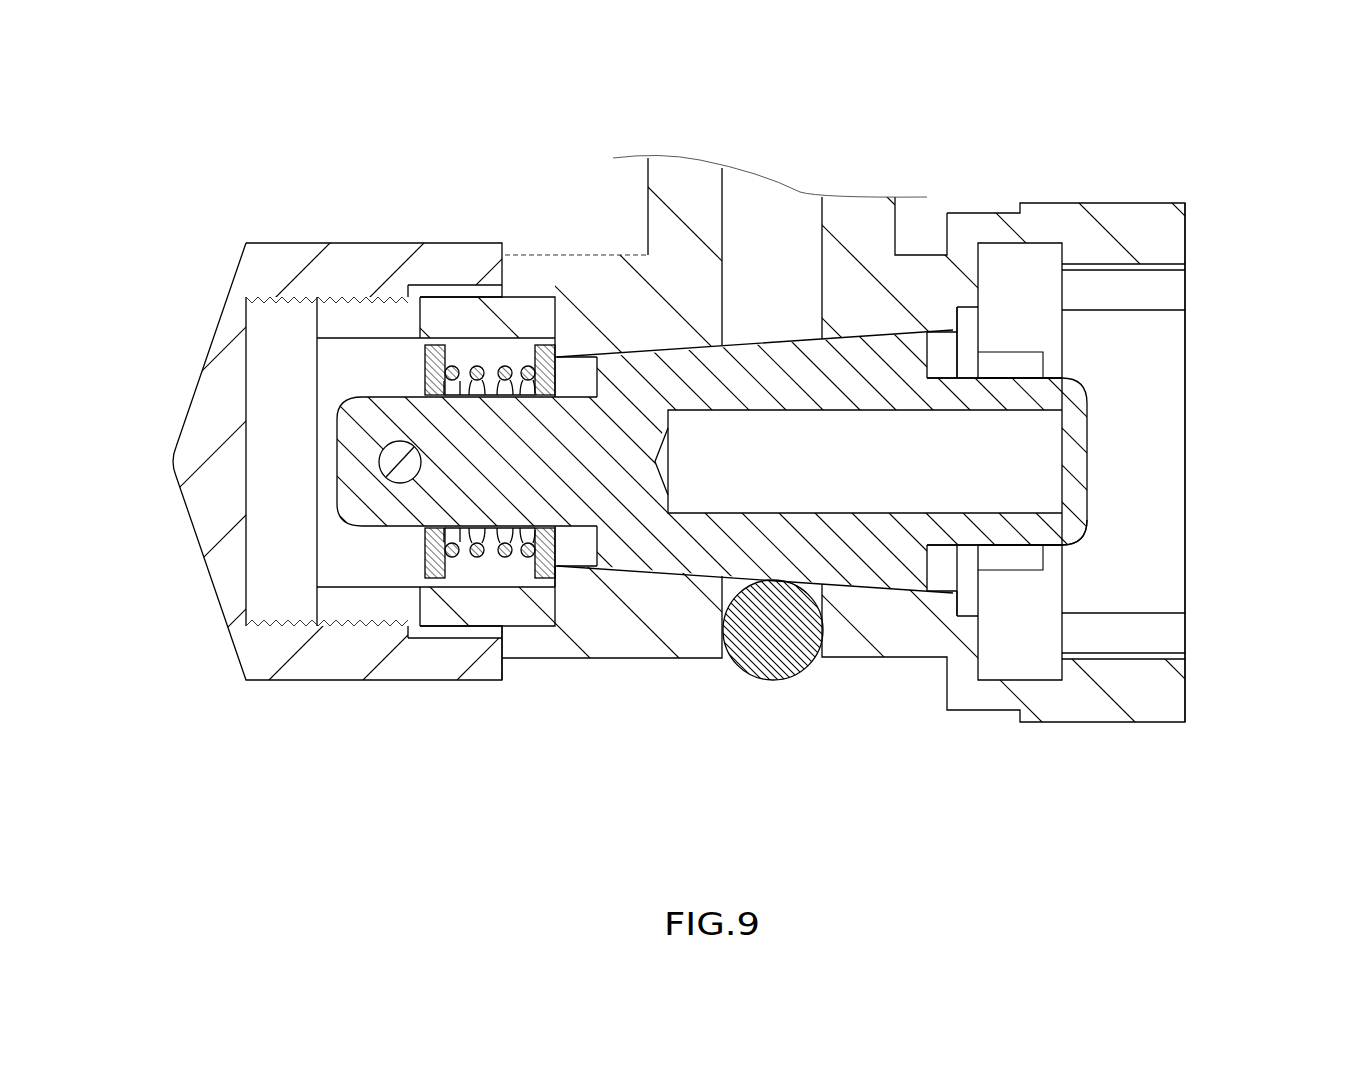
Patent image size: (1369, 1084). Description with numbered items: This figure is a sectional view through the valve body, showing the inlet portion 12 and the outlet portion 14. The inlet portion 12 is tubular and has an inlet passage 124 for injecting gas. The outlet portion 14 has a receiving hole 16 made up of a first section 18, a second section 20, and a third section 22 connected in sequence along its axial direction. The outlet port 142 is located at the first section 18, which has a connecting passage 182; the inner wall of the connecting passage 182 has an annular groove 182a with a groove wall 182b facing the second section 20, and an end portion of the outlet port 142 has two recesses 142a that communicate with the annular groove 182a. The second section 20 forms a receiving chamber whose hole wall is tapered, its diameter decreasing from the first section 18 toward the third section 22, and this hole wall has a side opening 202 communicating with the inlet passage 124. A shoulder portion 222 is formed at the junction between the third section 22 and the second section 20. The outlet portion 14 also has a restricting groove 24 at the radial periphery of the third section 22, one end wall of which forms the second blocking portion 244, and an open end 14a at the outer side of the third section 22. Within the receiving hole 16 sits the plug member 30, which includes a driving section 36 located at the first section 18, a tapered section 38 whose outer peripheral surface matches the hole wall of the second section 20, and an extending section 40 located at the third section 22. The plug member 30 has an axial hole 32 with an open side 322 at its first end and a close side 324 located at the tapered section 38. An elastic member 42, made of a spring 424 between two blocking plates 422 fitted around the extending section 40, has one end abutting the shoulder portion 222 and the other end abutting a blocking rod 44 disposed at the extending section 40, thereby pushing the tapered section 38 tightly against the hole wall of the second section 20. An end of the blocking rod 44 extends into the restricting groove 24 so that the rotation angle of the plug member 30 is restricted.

The inlet portion 12 is at (657, 180).
The inlet passage 124 is at (743, 210).
The outlet portion 14 is at (610, 640).
The open end 14a is at (323, 553).
The outlet port 142 is at (1188, 367).
The recess 142a is at (1167, 292).
The receiving hole 16 is at (585, 357).
The first section 18 is at (1168, 578).
The connecting passage 182 is at (1110, 560).
The annular groove 182a is at (1023, 660).
The groove wall 182b is at (1058, 560).
The second section 20 is at (708, 566).
The side opening 202 is at (765, 335).
The third section 22 is at (387, 517).
The shoulder portion 222 is at (557, 350).
The restricting groove 24 is at (340, 327).
The second blocking portion 244 is at (367, 330).
The plug member 30 is at (612, 513).
The axial hole 32 is at (843, 470).
The open side 322 is at (1080, 458).
The close side 324 is at (660, 478).
The driving section 36 is at (1084, 550).
The tapered section 38 is at (742, 552).
The extending section 40 is at (310, 520).
The elastic member 42 is at (430, 382).
The blocking plate 422 is at (427, 373).
The spring 424 is at (490, 553).
The blocking rod 44 is at (392, 462).